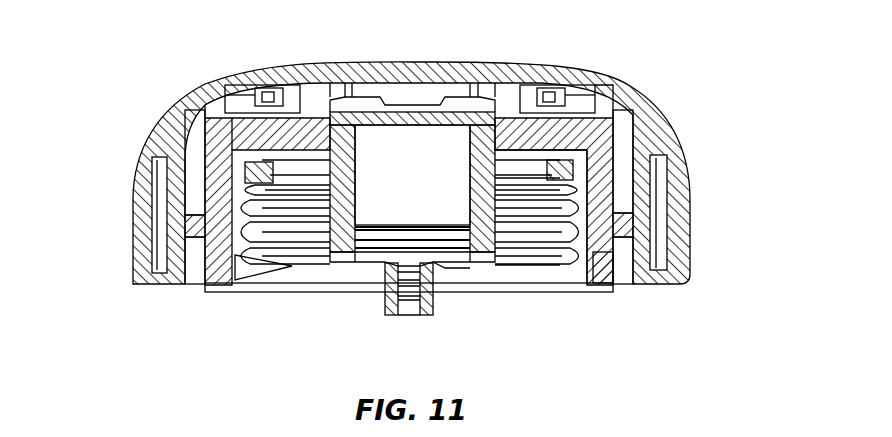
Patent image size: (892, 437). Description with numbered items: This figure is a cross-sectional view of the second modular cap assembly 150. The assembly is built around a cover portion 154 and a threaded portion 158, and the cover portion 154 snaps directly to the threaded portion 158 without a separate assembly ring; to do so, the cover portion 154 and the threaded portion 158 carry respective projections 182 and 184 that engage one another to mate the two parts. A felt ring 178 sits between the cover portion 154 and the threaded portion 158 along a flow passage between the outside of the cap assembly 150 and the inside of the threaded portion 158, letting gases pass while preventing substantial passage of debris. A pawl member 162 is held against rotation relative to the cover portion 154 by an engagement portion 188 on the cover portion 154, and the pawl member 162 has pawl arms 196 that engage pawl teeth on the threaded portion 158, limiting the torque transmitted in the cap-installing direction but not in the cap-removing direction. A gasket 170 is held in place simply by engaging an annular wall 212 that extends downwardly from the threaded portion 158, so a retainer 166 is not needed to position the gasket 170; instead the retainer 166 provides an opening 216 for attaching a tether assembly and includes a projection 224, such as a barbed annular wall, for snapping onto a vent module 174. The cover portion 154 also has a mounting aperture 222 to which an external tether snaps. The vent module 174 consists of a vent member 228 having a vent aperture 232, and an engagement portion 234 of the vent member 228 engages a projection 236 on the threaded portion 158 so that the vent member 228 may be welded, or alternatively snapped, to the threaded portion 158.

The modular cap assembly 150 is at (131, 50).
The cover portion 154 is at (643, 123).
The threaded portion 158 is at (600, 197).
The pawl member 162 is at (318, 135).
The retainer 166 is at (435, 265).
The gasket 170 is at (563, 175).
The vent module 174 is at (329, 276).
The felt ring 178 is at (630, 218).
The projection 182 is at (190, 284).
The projection 184 is at (198, 272).
The engagement portion 188 is at (280, 95).
The pawl arm 196 is at (243, 100).
The annular wall 212 is at (528, 178).
The opening 216 is at (395, 300).
The mounting aperture 222 is at (407, 64).
The projection 224 is at (372, 255).
The vent member 228 is at (353, 187).
The vent aperture 232 is at (415, 123).
The engagement portion 234 is at (596, 100).
The projection 236 is at (533, 100).